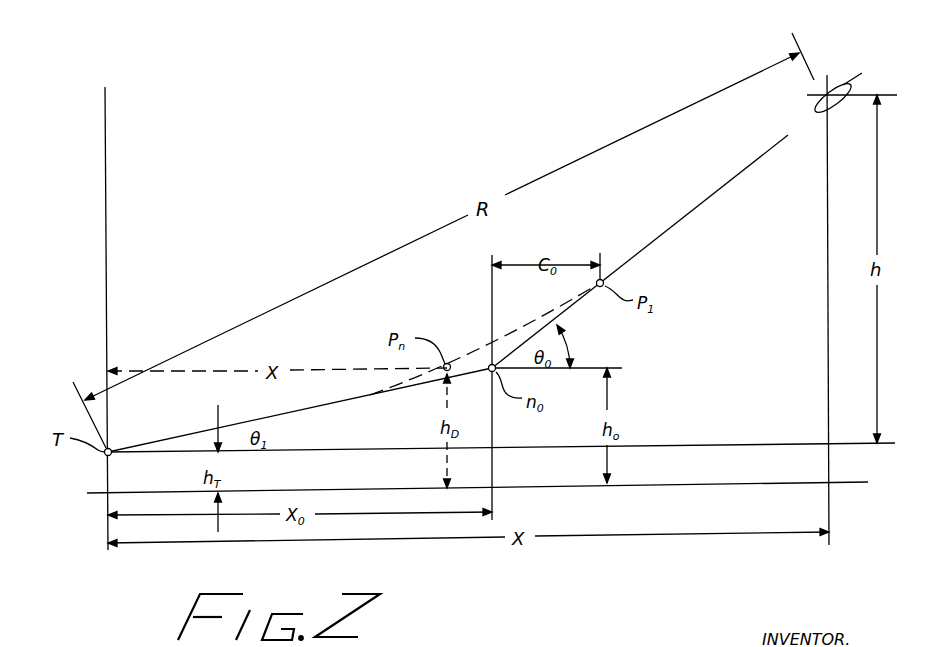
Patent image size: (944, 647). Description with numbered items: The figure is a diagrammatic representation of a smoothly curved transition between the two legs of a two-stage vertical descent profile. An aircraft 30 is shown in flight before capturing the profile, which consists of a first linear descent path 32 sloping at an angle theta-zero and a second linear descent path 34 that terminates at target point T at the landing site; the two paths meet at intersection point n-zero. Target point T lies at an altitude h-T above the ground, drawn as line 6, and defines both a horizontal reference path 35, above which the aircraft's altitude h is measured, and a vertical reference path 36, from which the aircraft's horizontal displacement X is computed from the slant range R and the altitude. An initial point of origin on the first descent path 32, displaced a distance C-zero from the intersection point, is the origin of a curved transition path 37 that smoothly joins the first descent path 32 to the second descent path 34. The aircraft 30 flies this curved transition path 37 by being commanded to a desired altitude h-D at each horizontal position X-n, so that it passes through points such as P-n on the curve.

The aircraft 30 is at (837, 86).
The first linear descent path 32 is at (695, 210).
The second linear descent path 34 is at (423, 383).
The horizontal reference path 35 is at (670, 443).
The vertical reference path 36 is at (106, 268).
The curved transition path 37 is at (490, 347).
The ground line 6 is at (713, 483).